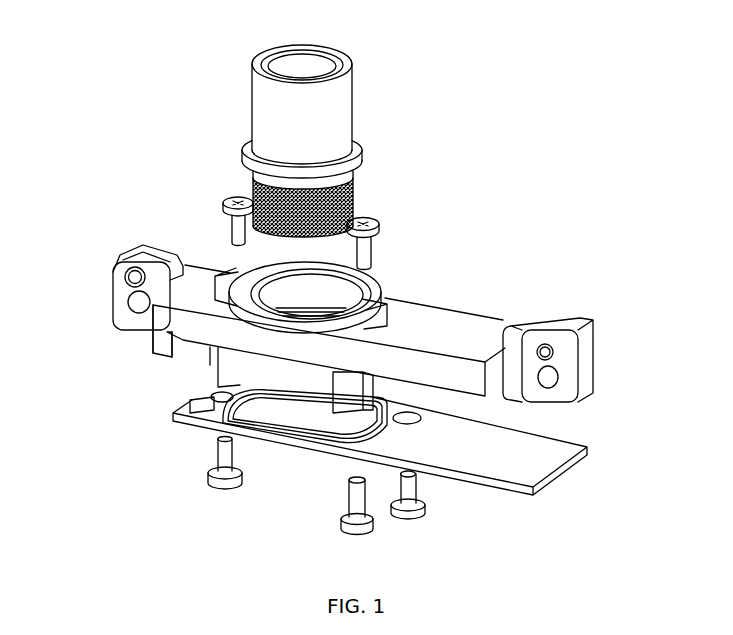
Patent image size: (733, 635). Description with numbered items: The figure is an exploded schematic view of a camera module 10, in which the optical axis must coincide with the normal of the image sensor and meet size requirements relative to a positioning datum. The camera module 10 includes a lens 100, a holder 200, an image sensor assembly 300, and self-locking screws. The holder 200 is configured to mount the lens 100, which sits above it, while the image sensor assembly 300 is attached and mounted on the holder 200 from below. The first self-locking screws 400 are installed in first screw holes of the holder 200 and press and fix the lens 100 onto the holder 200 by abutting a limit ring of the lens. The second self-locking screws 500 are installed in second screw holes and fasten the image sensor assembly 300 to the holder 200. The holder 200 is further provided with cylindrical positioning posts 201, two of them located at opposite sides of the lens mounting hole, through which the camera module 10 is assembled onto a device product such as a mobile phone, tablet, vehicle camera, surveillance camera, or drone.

The camera module 10 is at (40, 47).
The lens 100 is at (357, 105).
The holder 200 is at (484, 326).
The positioning post 201 is at (555, 344).
The image sensor assembly 300 is at (506, 468).
The first self-locking screw 400 is at (381, 215).
The second self-locking screw 500 is at (210, 476).